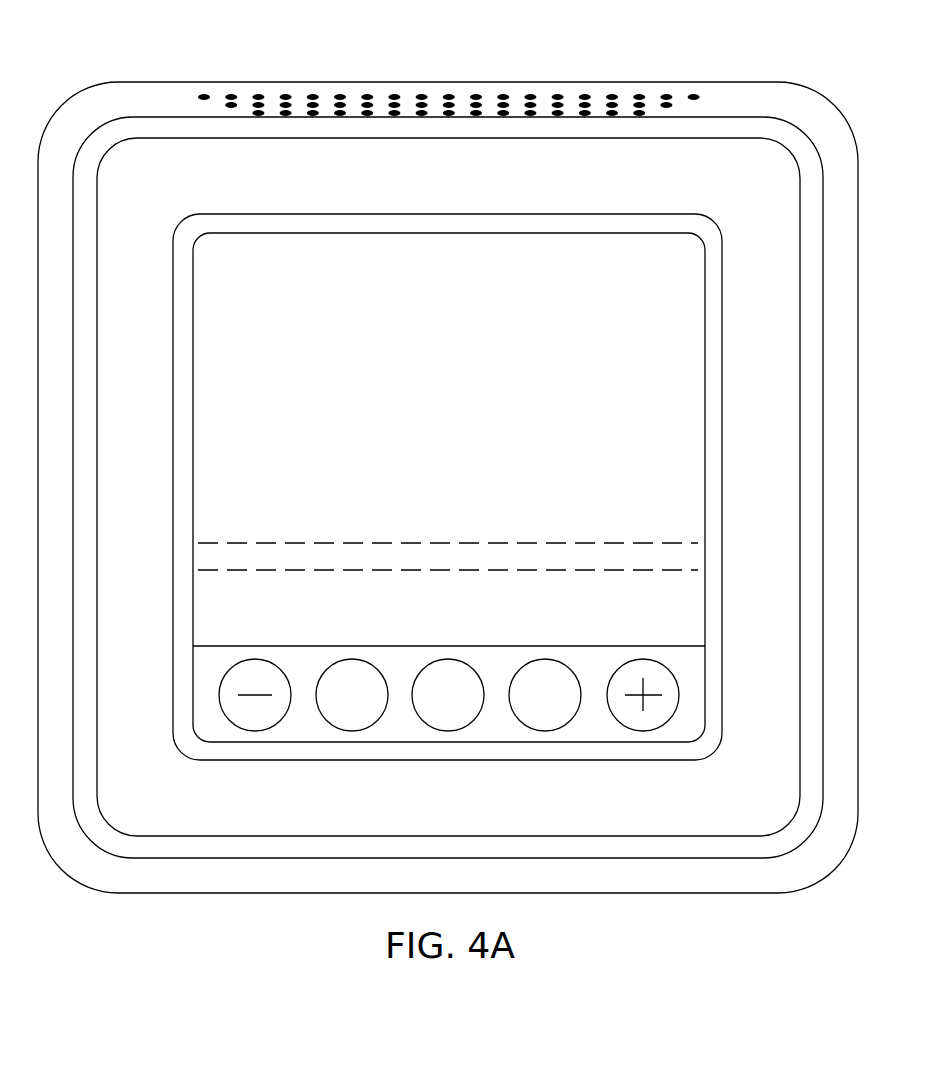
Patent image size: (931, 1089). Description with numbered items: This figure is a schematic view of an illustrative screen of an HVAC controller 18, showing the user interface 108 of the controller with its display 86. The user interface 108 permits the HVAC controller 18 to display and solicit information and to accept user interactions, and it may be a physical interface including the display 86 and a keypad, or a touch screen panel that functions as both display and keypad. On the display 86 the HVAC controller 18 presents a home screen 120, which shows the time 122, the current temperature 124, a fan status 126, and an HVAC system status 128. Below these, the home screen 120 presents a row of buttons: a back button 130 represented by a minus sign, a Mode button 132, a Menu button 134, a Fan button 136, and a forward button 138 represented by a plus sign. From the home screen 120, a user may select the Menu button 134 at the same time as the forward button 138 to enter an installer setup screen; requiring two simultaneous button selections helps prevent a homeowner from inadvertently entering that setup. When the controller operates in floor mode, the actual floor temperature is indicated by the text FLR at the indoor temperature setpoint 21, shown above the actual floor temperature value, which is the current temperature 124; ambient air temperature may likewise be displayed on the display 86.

The HVAC controller 18 is at (488, 82).
The indoor temperature setpoint 21 is at (503, 338).
The display 86 is at (687, 258).
The user interface 108 is at (177, 767).
The home screen 120 is at (220, 325).
The time 122 is at (497, 250).
The current temperature 124 is at (398, 413).
The fan status 126 is at (585, 413).
The HVAC system status 128 is at (338, 480).
The back button 130 is at (259, 722).
The Mode button 132 is at (355, 722).
The Menu button 134 is at (452, 722).
The Fan button 136 is at (548, 722).
The forward button 138 is at (649, 722).